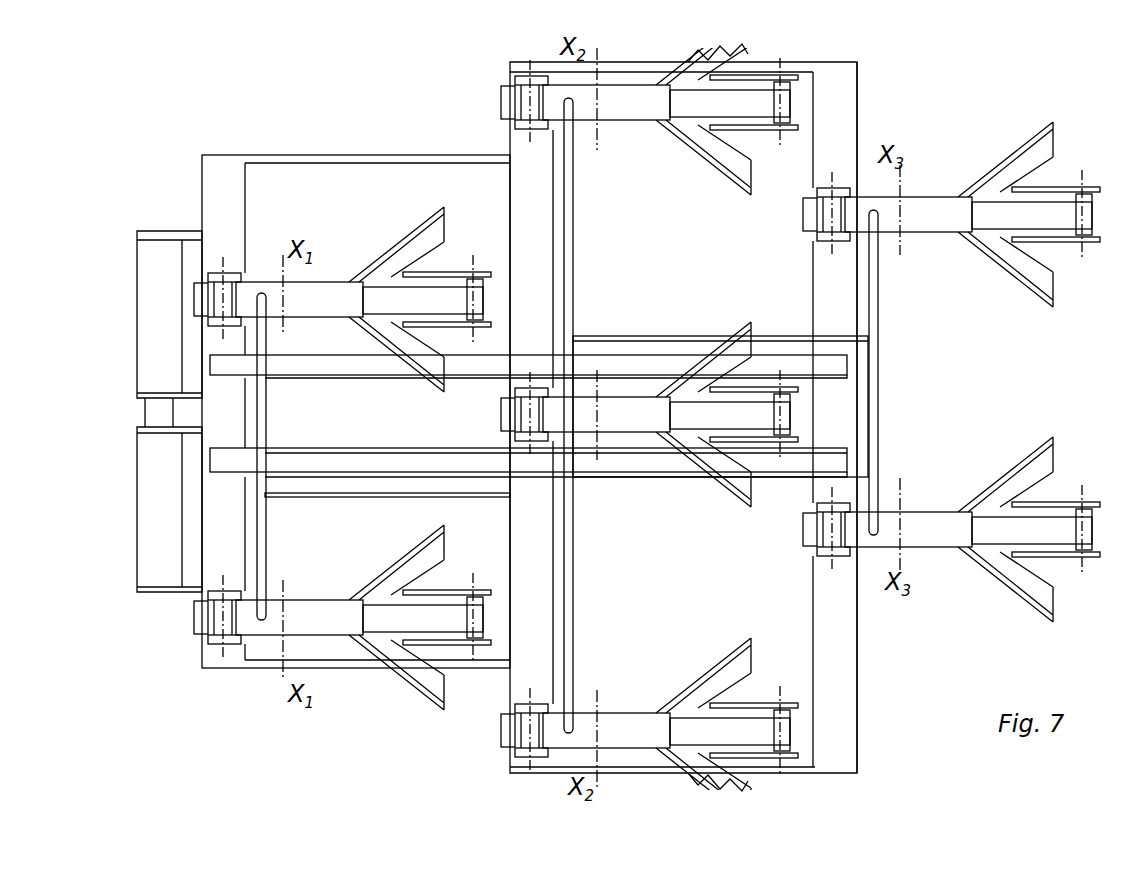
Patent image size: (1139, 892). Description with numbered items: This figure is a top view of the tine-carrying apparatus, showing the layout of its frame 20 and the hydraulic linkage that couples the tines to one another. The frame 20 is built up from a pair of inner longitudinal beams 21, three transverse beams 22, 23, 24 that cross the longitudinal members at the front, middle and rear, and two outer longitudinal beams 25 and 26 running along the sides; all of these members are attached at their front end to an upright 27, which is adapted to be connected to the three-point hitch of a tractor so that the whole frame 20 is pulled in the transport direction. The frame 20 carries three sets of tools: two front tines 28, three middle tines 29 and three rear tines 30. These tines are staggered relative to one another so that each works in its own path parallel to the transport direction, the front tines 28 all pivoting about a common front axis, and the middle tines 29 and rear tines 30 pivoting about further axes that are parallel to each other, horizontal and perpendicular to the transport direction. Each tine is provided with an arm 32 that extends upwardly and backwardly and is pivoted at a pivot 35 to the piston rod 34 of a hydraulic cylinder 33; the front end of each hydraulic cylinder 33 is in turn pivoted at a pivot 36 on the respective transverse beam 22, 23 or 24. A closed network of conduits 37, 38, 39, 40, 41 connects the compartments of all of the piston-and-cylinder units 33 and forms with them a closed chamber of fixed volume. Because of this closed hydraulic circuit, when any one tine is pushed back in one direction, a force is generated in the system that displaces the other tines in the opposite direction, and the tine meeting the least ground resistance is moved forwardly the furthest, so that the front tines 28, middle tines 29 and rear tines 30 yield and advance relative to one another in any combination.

The frame 20 is at (539, 419).
The inner longitudinal beams 21 is at (623, 372).
The transverse beam 22 is at (230, 518).
The transverse beam 23 is at (540, 610).
The transverse beam 24 is at (813, 597).
The outer longitudinal beam 25 is at (352, 160).
The outer longitudinal beam 26 is at (672, 64).
The upright 27 is at (158, 440).
The front tines 28 is at (386, 276).
The middle tines 29 is at (702, 132).
The rear tines 30 is at (1000, 185).
The arm 32 is at (427, 326).
The hydraulic cylinder 33 is at (326, 306).
The piston rod 34 is at (441, 613).
The pivot 35 is at (473, 597).
The pivot 36 is at (222, 620).
The conduit 37 is at (262, 388).
The conduit 38 is at (345, 493).
The conduit 39 is at (572, 243).
The conduit 40 is at (686, 337).
The conduit 41 is at (878, 398).